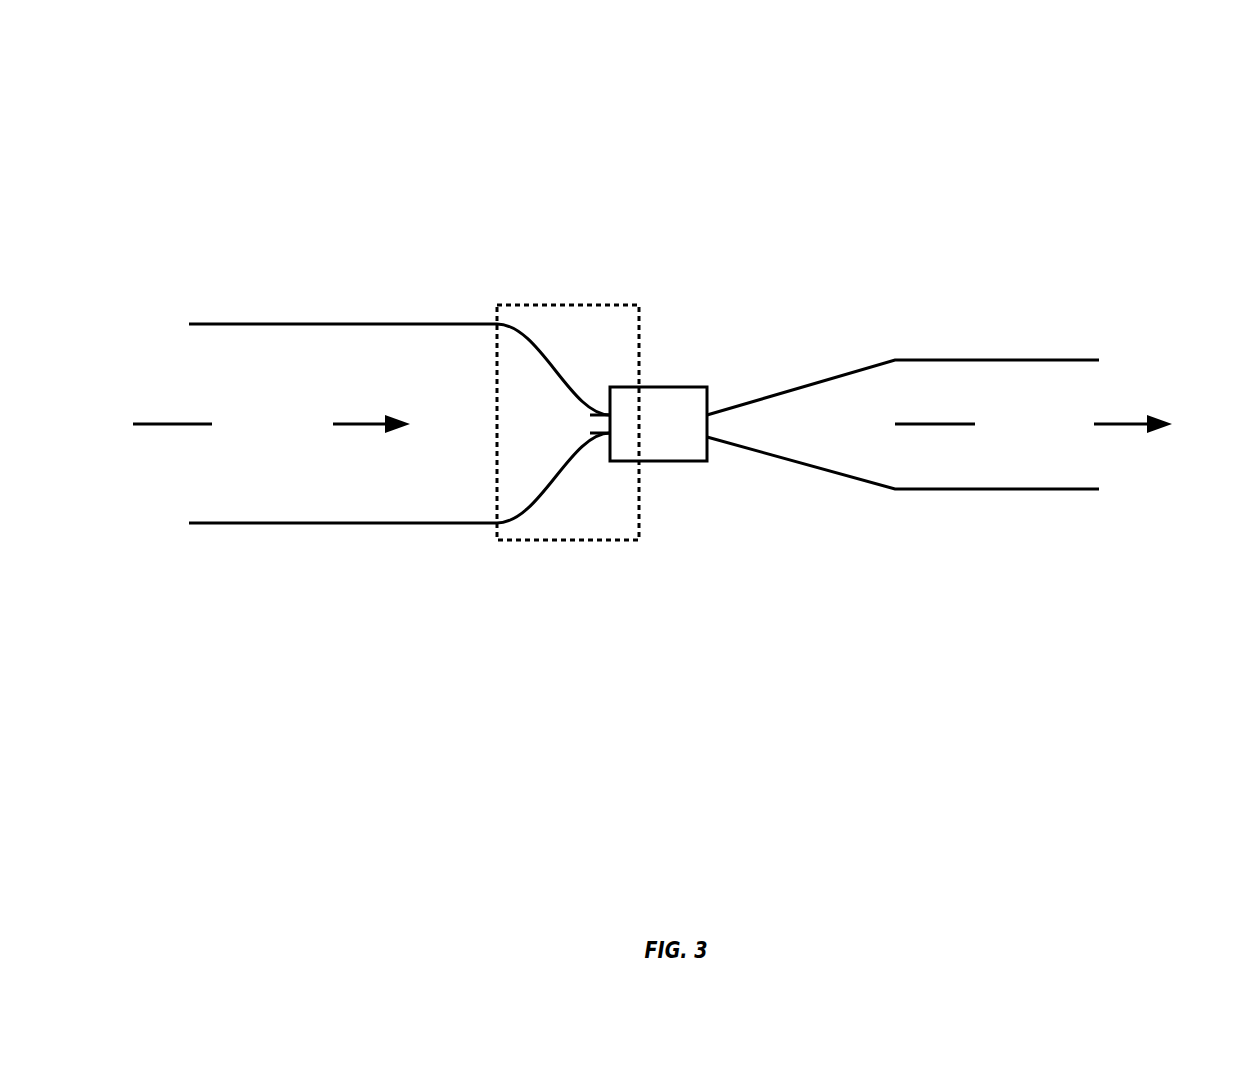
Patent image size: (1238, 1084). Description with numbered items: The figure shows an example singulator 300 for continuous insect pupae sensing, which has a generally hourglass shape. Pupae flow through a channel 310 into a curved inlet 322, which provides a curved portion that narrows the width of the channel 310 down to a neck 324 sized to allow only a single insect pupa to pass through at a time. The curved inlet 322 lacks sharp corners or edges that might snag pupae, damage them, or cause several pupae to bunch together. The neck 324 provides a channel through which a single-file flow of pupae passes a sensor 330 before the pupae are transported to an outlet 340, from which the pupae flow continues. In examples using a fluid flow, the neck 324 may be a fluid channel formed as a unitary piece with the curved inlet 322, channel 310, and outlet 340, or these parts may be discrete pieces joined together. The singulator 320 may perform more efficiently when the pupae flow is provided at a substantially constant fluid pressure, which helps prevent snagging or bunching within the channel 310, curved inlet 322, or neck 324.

The singulator 300 is at (280, 137).
The channel 310 is at (370, 565).
The singulator 320 is at (600, 542).
The curved inlet 322 is at (540, 555).
The neck 324 is at (593, 368).
The sensor 330 is at (658, 424).
The outlet 340 is at (878, 620).